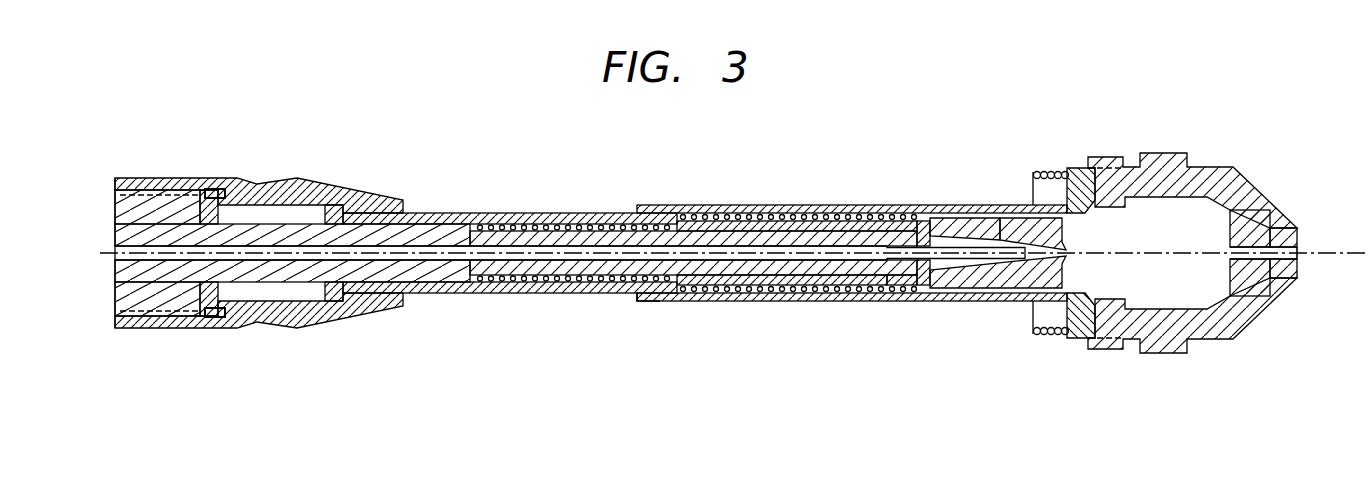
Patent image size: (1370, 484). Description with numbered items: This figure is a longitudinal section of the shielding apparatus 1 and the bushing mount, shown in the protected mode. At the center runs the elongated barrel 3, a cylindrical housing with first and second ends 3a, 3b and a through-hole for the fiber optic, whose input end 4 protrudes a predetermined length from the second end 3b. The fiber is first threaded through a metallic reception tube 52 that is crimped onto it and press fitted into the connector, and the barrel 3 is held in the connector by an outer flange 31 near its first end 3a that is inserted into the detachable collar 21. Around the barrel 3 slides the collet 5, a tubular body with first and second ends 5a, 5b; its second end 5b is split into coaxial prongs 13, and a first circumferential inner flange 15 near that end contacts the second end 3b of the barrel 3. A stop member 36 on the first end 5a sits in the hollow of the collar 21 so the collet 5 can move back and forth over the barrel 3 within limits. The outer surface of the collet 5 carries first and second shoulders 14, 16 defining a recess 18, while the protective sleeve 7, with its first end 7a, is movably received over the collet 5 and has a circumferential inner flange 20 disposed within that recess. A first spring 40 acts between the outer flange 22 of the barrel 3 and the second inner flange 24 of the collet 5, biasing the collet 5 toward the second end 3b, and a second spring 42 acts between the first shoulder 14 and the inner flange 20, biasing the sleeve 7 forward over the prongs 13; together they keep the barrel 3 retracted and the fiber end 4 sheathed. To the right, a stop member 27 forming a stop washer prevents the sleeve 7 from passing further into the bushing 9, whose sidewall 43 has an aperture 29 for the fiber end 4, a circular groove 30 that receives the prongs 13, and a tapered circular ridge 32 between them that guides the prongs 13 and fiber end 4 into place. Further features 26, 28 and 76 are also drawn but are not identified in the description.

The shielding apparatus 1 is at (862, 146).
The elongated barrel 3 is at (440, 270).
The first end of barrel 3a is at (160, 216).
The second end of barrel 3b is at (890, 224).
The input end of fiber optic 4 is at (1020, 268).
The collet 5 is at (522, 290).
The first end of collet 5a is at (345, 200).
The second end of collet 5b is at (939, 217).
The protective sleeve 7 is at (770, 205).
The first end of sleeve 7a is at (630, 318).
The bushing 9 is at (1181, 145).
The prongs 13 is at (1022, 227).
The first shoulder 14 is at (679, 214).
The first circumferential inner flange 15 is at (941, 295).
The second shoulder 16 is at (926, 226).
The recess 18 is at (752, 207).
The circumferential inner flange of sleeve 20 is at (912, 290).
The detachable collar 21 is at (292, 188).
The outer flange of barrel 22 is at (476, 226).
The second inner flange of collet 24 is at (672, 216).
The coil spring 26 is at (524, 226).
The stop member 27 is at (1074, 178).
The coil 28 is at (718, 292).
The aperture 29 is at (1308, 260).
The circular groove 30 is at (1240, 214).
The outer flange 31 is at (208, 212).
The circular ridge 32 is at (1243, 270).
The stop member 36 is at (337, 293).
The first spring 40 is at (596, 283).
The second spring 42 is at (778, 214).
The sidewall 43 is at (1282, 228).
The reception tube 52 is at (900, 268).
The spring coil 76 is at (1040, 318).